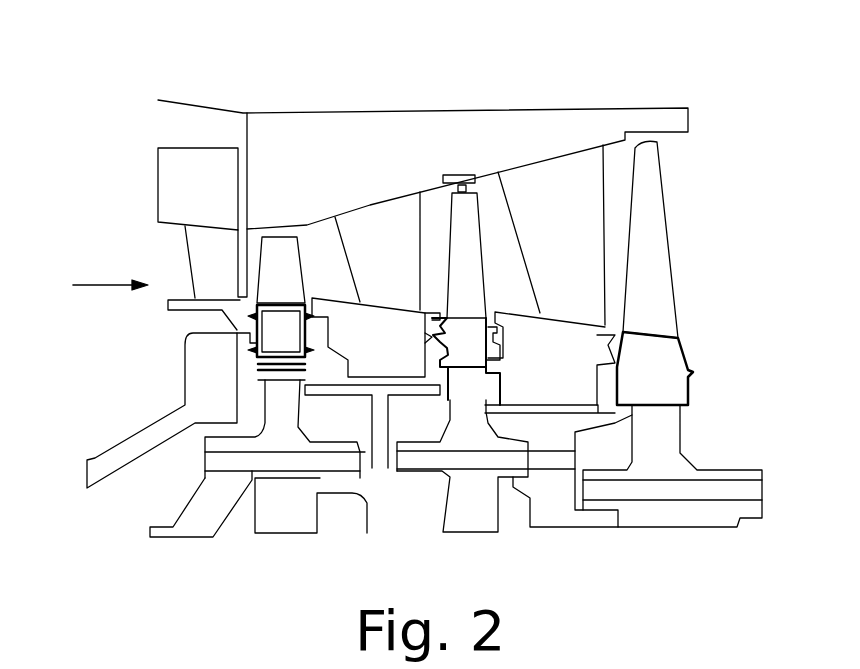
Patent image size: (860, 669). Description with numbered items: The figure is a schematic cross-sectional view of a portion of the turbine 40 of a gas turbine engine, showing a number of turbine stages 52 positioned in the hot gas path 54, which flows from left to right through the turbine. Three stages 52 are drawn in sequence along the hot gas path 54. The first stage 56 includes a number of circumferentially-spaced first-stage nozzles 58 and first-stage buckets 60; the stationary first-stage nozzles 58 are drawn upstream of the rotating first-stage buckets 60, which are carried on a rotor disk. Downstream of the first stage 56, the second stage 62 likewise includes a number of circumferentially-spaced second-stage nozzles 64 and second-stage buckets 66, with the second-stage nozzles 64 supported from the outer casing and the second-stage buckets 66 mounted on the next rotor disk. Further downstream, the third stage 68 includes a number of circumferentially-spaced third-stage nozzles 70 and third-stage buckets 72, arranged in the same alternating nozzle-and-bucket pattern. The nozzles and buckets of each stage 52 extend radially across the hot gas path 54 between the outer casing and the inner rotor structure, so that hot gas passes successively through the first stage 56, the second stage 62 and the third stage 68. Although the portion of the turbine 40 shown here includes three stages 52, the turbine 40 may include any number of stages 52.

The turbine 40 is at (96, 74).
The stages 52 is at (130, 182).
The hot gas path 54 is at (93, 282).
The first stage 56 is at (281, 186).
The first-stage nozzles 58 is at (202, 265).
The first-stage buckets 60 is at (324, 266).
The second stage 62 is at (433, 150).
The second-stage nozzles 64 is at (383, 240).
The second-stage buckets 66 is at (468, 257).
The third stage 68 is at (592, 122).
The third-stage nozzles 70 is at (580, 230).
The third-stage buckets 72 is at (655, 244).